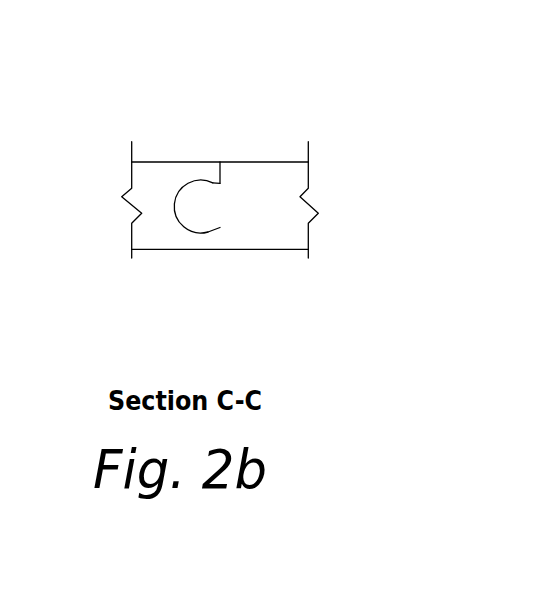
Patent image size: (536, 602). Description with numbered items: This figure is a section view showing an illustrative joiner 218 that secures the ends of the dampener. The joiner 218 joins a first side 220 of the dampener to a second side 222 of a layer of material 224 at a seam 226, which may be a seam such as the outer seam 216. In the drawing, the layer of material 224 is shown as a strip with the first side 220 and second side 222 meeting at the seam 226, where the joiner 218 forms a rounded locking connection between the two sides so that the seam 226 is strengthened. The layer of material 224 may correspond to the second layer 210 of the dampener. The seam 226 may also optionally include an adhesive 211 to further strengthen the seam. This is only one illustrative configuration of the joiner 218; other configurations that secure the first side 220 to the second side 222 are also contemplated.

The second layer 210 is at (303, 281).
The adhesive 211 is at (199, 233).
The outer seam 216 is at (220, 162).
The joiner 218 is at (202, 207).
The first side 220 is at (158, 160).
The second side 222 is at (265, 160).
The layer of material 224 is at (138, 277).
The seam 226 is at (220, 228).